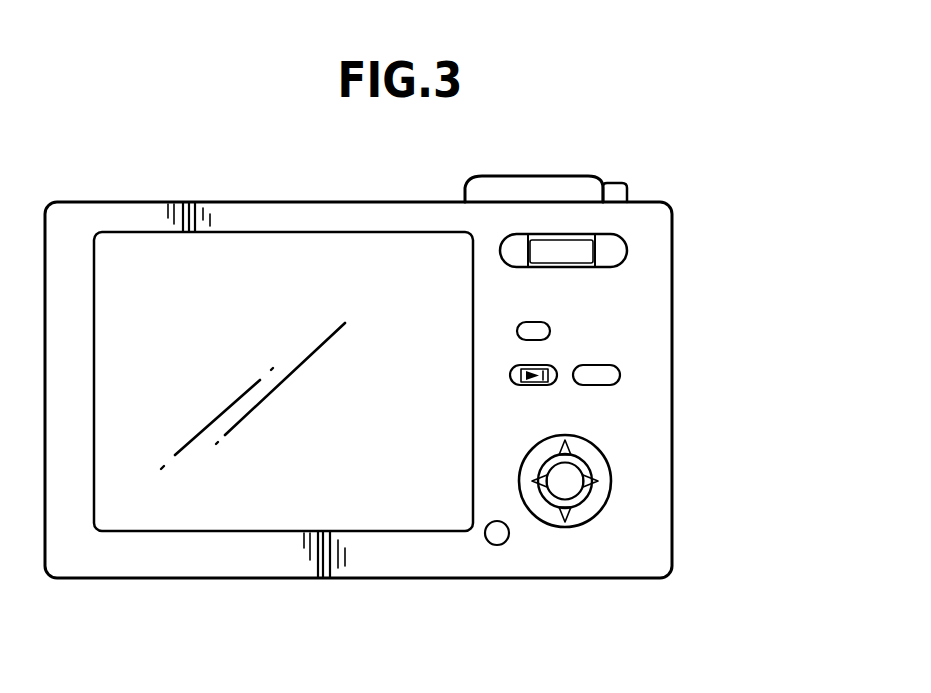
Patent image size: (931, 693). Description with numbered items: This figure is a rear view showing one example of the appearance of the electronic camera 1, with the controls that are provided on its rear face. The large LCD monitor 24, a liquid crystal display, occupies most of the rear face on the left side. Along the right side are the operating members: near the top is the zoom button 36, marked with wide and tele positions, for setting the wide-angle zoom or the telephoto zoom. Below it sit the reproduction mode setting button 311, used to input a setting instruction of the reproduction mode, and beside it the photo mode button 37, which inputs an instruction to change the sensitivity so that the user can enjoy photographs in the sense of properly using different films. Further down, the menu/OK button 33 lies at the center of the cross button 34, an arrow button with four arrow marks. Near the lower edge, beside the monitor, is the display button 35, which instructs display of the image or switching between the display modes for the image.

The electronic camera 1 is at (672, 283).
The LCD monitor 24 is at (278, 262).
The zoom button 36 is at (566, 246).
The reproduction mode setting button 311 is at (557, 367).
The photo mode button 37 is at (620, 378).
The menu/OK button 33 is at (571, 474).
The cross button 34 is at (594, 510).
The display button 35 is at (497, 545).